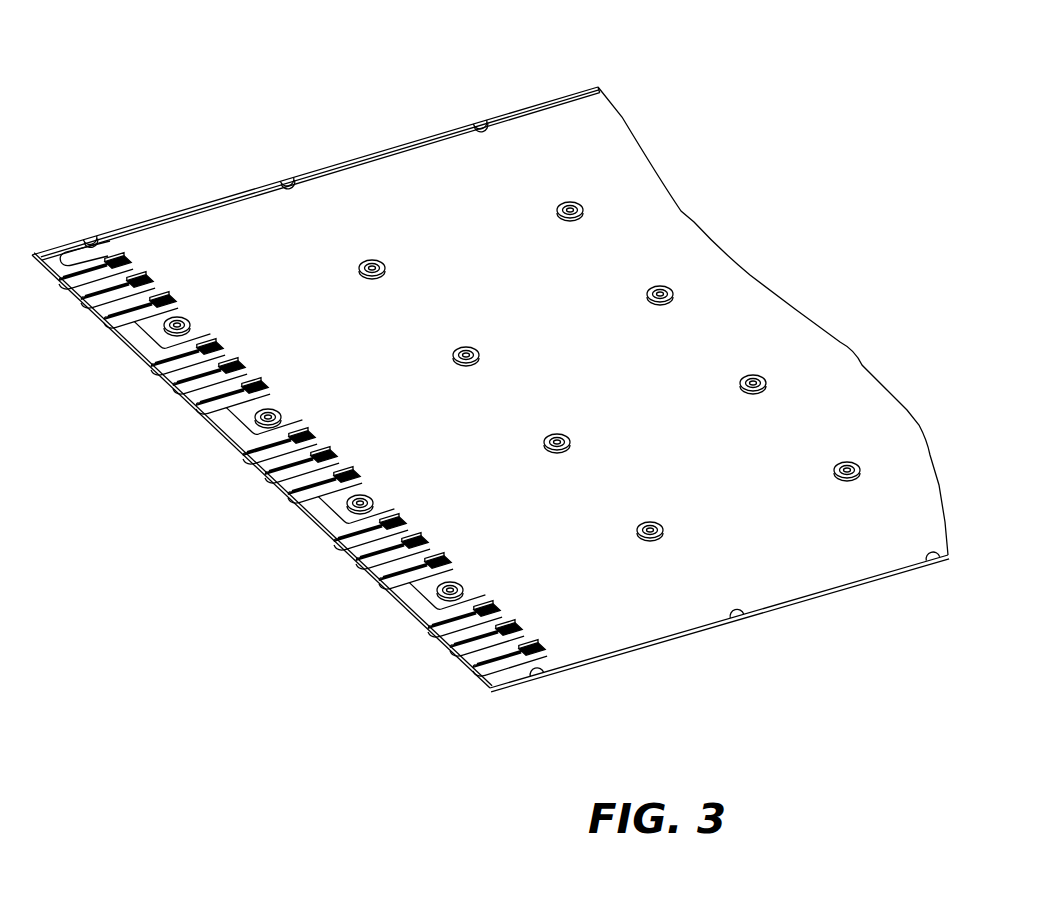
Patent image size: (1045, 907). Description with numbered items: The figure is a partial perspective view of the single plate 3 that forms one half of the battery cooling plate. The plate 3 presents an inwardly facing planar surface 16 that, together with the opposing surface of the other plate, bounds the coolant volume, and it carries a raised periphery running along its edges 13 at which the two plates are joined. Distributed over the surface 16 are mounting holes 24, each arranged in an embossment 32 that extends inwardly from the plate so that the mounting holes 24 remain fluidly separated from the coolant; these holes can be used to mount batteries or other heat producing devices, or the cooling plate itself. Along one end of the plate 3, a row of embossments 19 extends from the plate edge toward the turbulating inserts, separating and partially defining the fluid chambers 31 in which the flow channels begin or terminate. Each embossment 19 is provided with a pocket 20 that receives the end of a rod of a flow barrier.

The plate 3 is at (490, 367).
The edges 13 is at (683, 630).
The inwardly facing planar surface 16 is at (400, 187).
The embossments 19 is at (100, 268).
The pockets 20 is at (124, 258).
The mounting holes 24 is at (468, 347).
The fluid chambers 31 is at (73, 258).
The embossments 32 is at (455, 365).